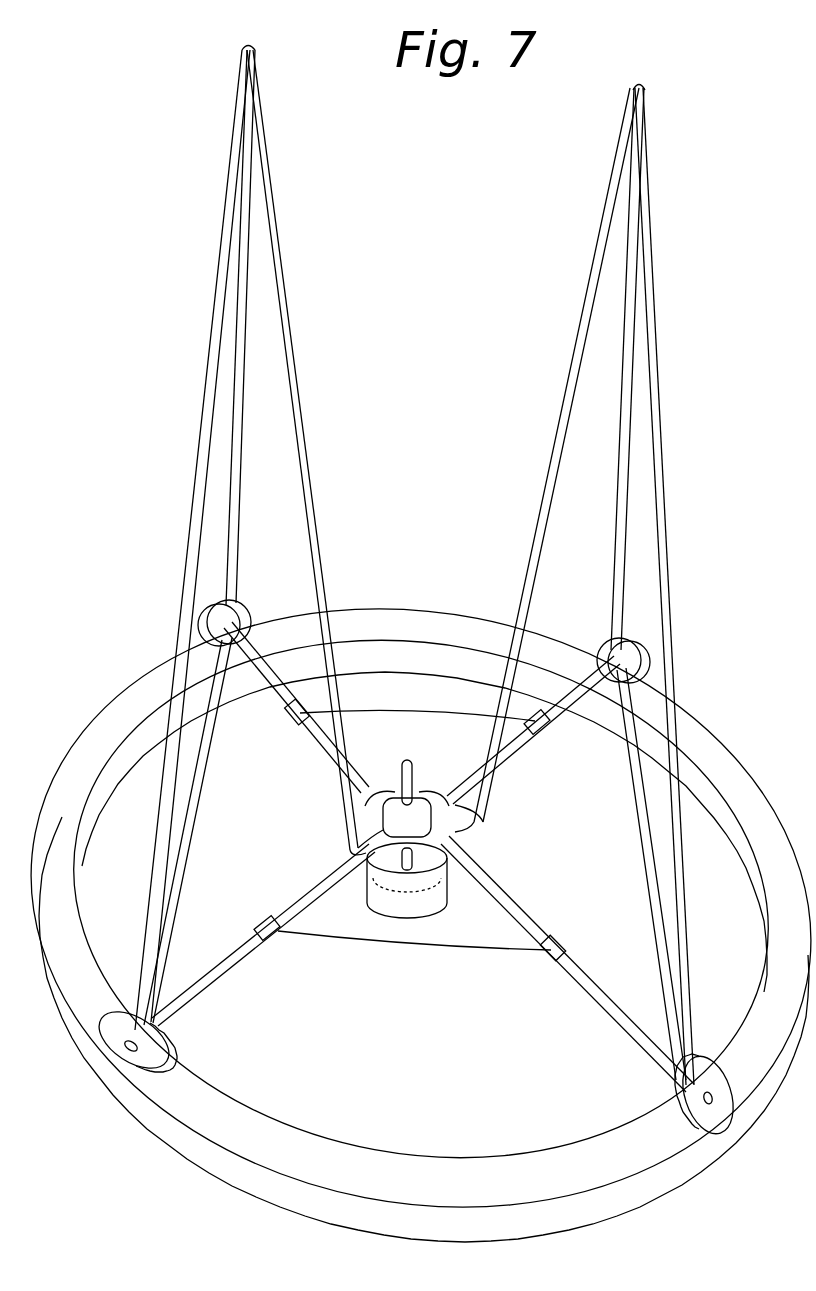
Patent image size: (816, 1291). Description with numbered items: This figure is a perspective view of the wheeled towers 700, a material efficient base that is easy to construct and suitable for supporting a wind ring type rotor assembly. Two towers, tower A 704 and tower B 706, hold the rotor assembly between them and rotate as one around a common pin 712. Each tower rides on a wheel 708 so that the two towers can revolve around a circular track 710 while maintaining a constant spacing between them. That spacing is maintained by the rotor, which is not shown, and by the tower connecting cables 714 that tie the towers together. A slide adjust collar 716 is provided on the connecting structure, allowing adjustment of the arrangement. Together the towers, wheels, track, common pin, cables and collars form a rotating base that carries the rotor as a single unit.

The wheeled towers 700 is at (121, 190).
The tower A 704 is at (265, 156).
The tower B 706 is at (628, 150).
The wheel 708 is at (678, 1096).
The circular track 710 is at (268, 1140).
The common pin 712 is at (368, 887).
The tower connecting cable 714 is at (372, 735).
The slide adjust collar 716 is at (272, 950).